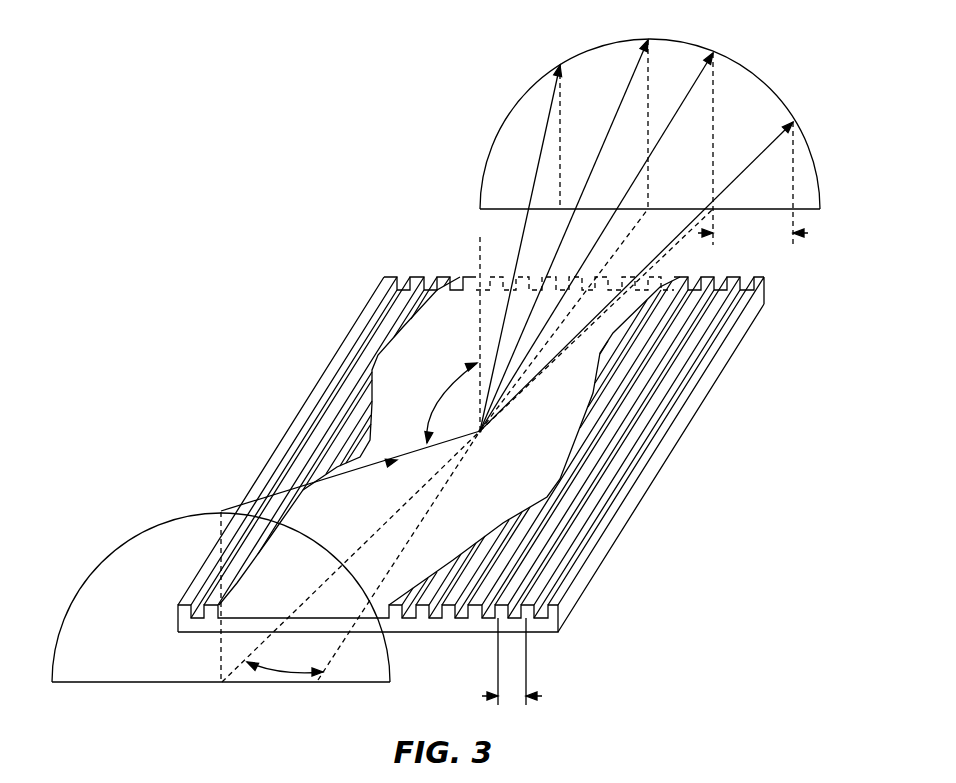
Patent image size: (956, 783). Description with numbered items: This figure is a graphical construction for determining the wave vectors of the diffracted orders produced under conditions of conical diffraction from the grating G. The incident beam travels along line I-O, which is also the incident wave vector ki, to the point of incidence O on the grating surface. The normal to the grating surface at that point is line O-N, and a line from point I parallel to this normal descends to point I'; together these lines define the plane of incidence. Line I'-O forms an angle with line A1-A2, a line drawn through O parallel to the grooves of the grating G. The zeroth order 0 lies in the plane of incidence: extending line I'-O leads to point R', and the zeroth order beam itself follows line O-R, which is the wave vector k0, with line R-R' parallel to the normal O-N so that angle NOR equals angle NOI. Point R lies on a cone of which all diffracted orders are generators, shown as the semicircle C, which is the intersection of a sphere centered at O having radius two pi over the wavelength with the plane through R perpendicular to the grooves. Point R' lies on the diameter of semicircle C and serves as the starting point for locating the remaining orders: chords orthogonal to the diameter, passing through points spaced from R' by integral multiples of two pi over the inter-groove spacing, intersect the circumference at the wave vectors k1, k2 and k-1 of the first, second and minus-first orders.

The grating G is at (471, 454).
The point R is at (650, 110).
The semicircle C is at (660, 194).
The wave vector of the +2 order k2 is at (507, 241).
The wave vector of the +1 order k1 is at (552, 203).
The wave vector of the 0th order k0 is at (691, 154).
The wave vector of the -1 order k-1 is at (769, 196).
The point R' is at (615, 283).
The point A2 is at (581, 308).
The 0th order diffraction 0 is at (723, 137).
The normal N is at (468, 331).
The point of incidence O is at (493, 446).
The incident wave vector ki is at (370, 467).
The point I is at (218, 585).
The point I' is at (266, 574).
The point A1 is at (396, 575).